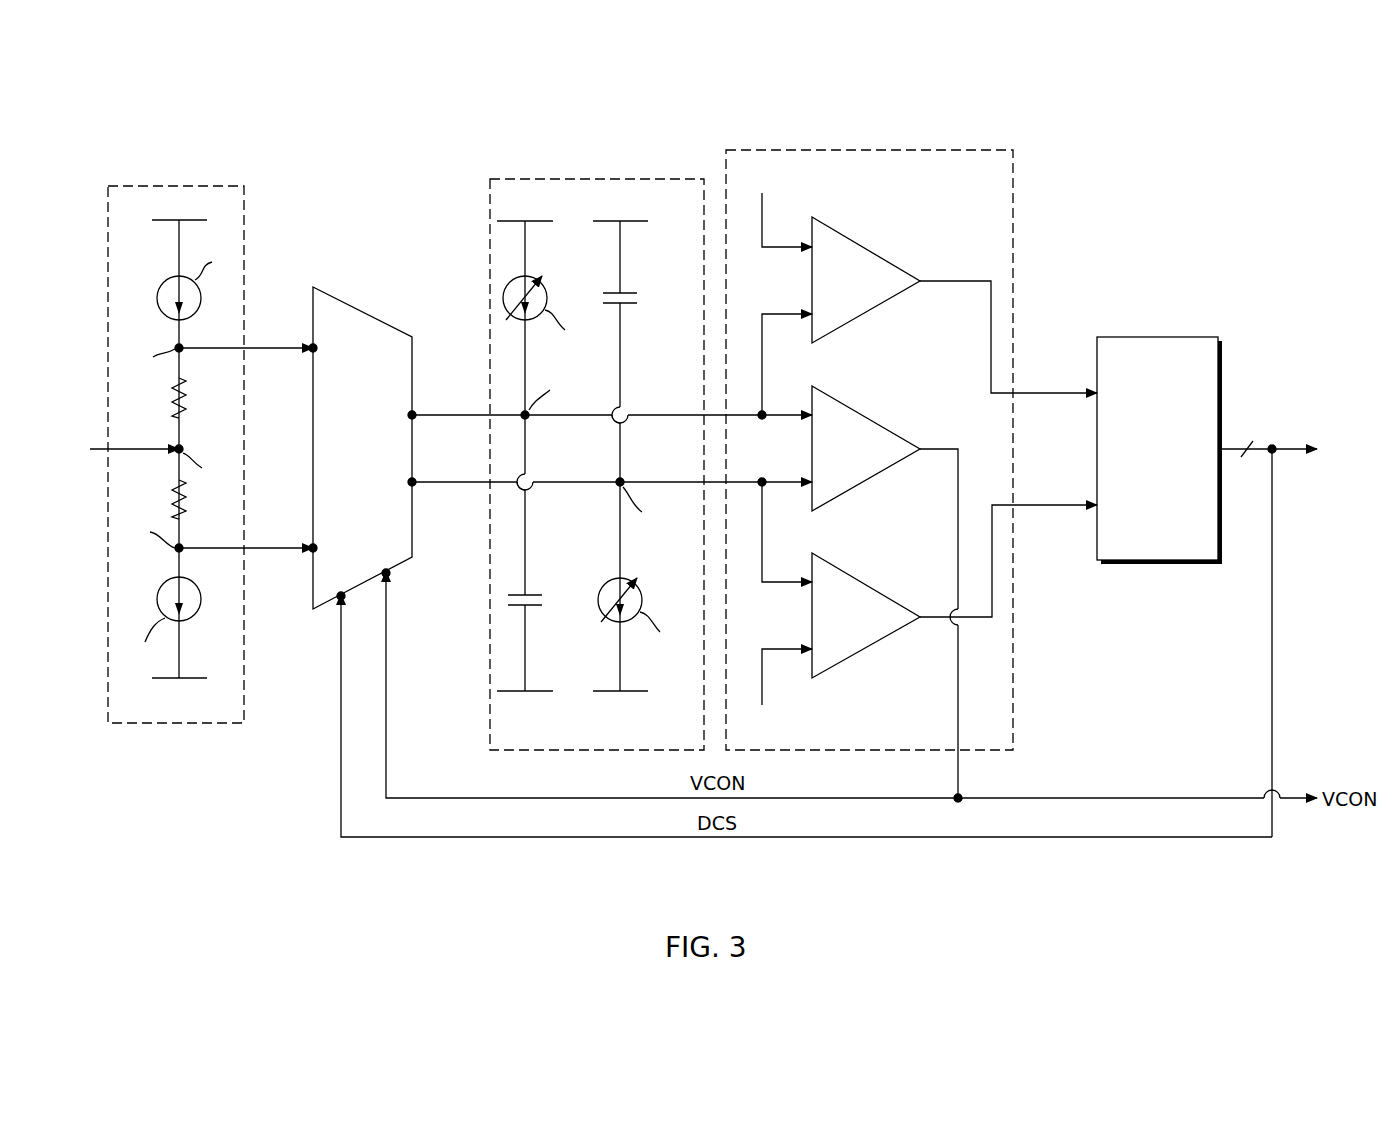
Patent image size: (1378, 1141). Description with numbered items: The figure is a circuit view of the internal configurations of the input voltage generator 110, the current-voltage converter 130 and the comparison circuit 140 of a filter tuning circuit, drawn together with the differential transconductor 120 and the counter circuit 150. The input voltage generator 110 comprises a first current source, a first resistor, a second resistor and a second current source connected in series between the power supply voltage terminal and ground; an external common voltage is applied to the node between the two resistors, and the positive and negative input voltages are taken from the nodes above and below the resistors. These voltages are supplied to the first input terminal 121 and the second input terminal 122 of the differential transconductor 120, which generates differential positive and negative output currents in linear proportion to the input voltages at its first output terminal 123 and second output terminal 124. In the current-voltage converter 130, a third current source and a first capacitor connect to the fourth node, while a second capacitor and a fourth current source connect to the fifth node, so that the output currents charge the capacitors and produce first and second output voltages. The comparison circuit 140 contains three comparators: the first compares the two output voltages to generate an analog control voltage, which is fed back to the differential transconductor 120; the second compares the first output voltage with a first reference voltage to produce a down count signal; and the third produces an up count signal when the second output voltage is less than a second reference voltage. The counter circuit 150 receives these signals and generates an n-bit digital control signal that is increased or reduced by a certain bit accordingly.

The input voltage generator 110 is at (160, 186).
The differential transconductor 120 is at (362, 311).
The first input terminal 121 is at (312, 346).
The second input terminal 122 is at (312, 551).
The first output terminal 123 is at (413, 413).
The second output terminal 124 is at (413, 486).
The current-voltage converter 130 is at (658, 179).
The comparison circuit 140 is at (890, 150).
The counter circuit 150 is at (1150, 337).